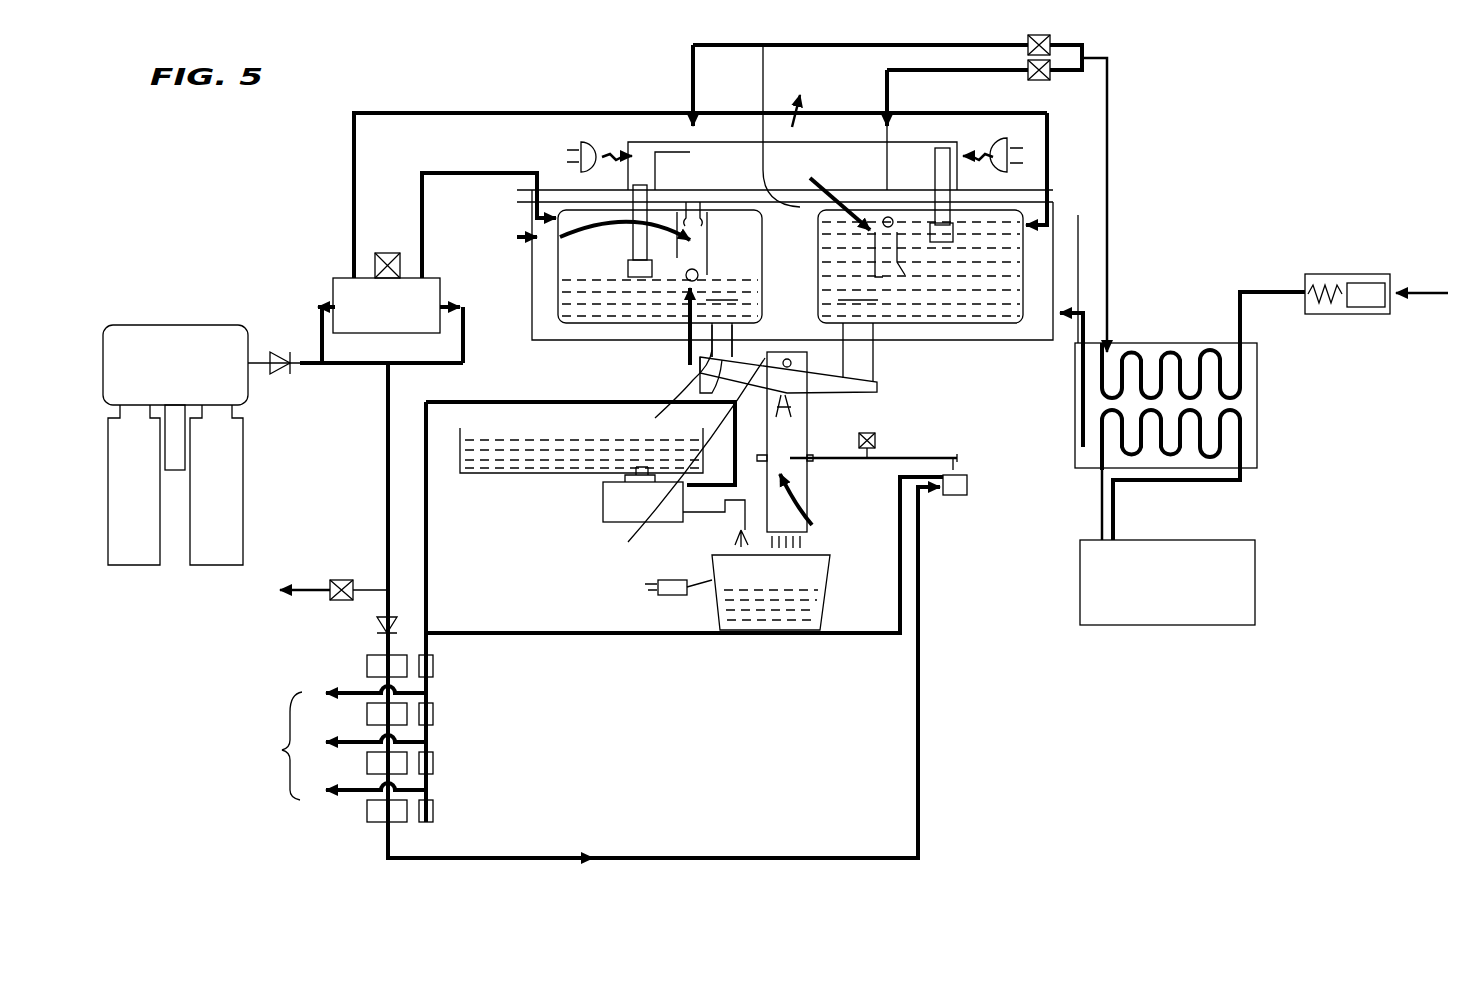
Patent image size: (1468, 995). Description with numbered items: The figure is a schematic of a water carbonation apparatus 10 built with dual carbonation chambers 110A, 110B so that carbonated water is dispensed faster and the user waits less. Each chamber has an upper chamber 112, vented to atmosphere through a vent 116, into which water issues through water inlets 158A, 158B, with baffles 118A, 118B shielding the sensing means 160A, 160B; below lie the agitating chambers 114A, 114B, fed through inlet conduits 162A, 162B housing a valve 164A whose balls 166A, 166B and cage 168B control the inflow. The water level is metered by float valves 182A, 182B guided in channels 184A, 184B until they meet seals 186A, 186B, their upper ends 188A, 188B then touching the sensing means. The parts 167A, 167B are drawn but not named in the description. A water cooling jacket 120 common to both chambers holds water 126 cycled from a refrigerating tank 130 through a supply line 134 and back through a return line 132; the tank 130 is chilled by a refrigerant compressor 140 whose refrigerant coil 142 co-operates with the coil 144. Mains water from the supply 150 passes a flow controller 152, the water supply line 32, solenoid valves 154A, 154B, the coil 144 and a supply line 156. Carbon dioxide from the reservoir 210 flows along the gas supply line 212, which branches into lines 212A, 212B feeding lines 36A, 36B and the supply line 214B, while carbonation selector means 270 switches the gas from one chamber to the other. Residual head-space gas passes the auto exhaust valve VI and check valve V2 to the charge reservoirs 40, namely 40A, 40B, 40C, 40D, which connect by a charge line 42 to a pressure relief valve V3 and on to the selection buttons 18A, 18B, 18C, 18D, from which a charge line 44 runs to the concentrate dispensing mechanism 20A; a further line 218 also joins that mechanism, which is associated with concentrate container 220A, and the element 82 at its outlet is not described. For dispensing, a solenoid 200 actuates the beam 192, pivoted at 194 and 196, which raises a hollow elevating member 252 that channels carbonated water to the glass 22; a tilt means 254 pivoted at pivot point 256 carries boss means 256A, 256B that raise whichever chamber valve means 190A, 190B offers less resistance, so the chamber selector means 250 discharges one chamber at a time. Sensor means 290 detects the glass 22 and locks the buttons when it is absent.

The carbonation apparatus 10 is at (382, 88).
The selection button 18A is at (438, 666).
The selection button 18B is at (438, 715).
The selection button 18C is at (438, 763).
The selection button 18D is at (438, 811).
The concentrate dispensing mechanism 20A is at (605, 520).
The glass 22 is at (814, 580).
The water supply line 32 is at (1280, 288).
The gas supply line 36A is at (422, 173).
The gas supply line 36B is at (355, 199).
The charge reservoirs 40 is at (372, 663).
The charge reservoir 40A is at (370, 675).
The charge reservoir 40B is at (367, 720).
The charge reservoir 40C is at (367, 770).
The charge reservoir 40D is at (367, 815).
The charge line 42 is at (826, 634).
The charge line 44 is at (428, 463).
The nozzle 82 is at (736, 537).
The carbonation chamber 110A is at (576, 217).
The carbonation chamber 110B is at (886, 199).
The upper chamber 112 is at (745, 128).
The agitating chamber 114A is at (733, 242).
The agitating chamber 114B is at (1015, 297).
The vent 116 is at (772, 128).
The baffle 118A is at (828, 146).
The baffle 118B is at (925, 172).
The cooling jacket 120 is at (534, 346).
The water 126 is at (534, 318).
The refrigerating tank 130 is at (1250, 400).
The return line 132 is at (1080, 240).
The supply line 134 is at (1075, 336).
The refrigerant compressor 140 is at (1252, 561).
The refrigerant coil 142 is at (1254, 459).
The coil 144 is at (1249, 359).
The mains water supply 150 is at (1424, 290).
The flow controller 152 is at (1349, 273).
The solenoid valve 154A is at (1052, 40).
The solenoid valve 154B is at (1108, 58).
The supply line 156 is at (1109, 100).
The water inlet 158A is at (685, 126).
The water inlet 158B is at (885, 124).
The sensing means 160A is at (580, 140).
The sensing means 160B is at (995, 152).
The inlet conduit 162A is at (502, 238).
The inlet conduit 162B is at (900, 250).
The valve 164A is at (666, 338).
The ball 166A is at (687, 282).
The ball 166B is at (835, 216).
The baffle 167A is at (689, 194).
The baffle 167B is at (863, 150).
The cage 168B is at (632, 246).
The float valve 182A is at (628, 262).
The float valve 182B is at (880, 246).
The channel 184A is at (572, 208).
The channel 184B is at (945, 228).
The seal 186A is at (632, 258).
The seal 186B is at (935, 205).
The upper end 188A is at (622, 142).
The upper end 188B is at (976, 142).
The chamber valve means 190A is at (783, 378).
The chamber valve means 190B is at (829, 458).
The beam 192 is at (892, 460).
The pivot 194 is at (852, 460).
The pivot 196 is at (953, 458).
The solenoid 200 is at (905, 490).
The carbon dioxide reservoir 210 is at (161, 325).
The gas supply line 212 is at (300, 342).
The branch line 212A is at (406, 378).
The branch line 212B is at (328, 300).
The supply line 214B is at (1050, 118).
The further line 218 is at (384, 422).
The concentrate container 220A is at (483, 475).
The chamber selector means 250 is at (823, 511).
The elevating member 252 is at (800, 530).
The tilt means 254 is at (824, 422).
The pivot point 256 is at (678, 459).
The boss means 256A is at (659, 390).
The boss means 256B is at (876, 437).
The carbonation selector means 270 is at (334, 275).
The sensor means 290 is at (656, 598).
The check valve V2 is at (375, 628).
The pressure relief valve V3 is at (966, 490).
The auto exhaust valve VI is at (341, 578).